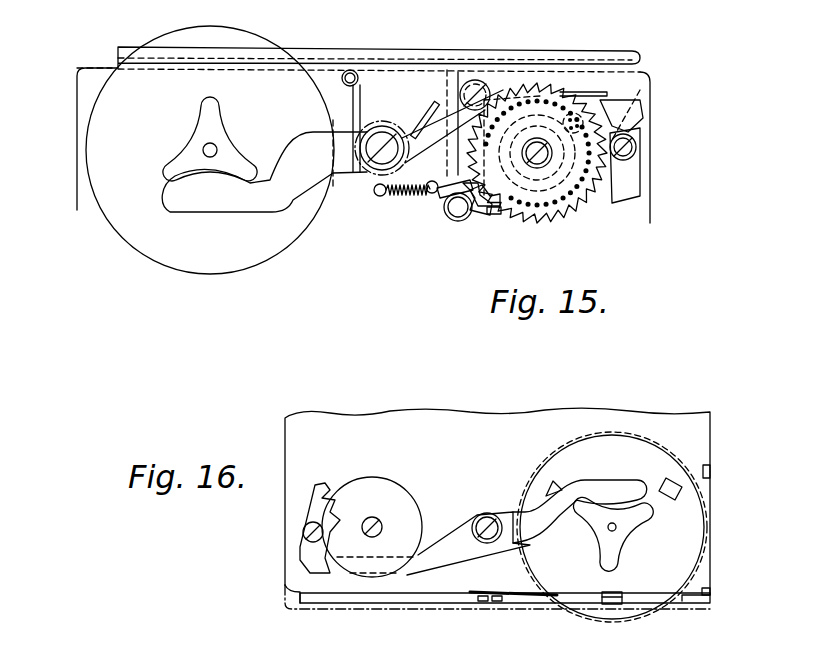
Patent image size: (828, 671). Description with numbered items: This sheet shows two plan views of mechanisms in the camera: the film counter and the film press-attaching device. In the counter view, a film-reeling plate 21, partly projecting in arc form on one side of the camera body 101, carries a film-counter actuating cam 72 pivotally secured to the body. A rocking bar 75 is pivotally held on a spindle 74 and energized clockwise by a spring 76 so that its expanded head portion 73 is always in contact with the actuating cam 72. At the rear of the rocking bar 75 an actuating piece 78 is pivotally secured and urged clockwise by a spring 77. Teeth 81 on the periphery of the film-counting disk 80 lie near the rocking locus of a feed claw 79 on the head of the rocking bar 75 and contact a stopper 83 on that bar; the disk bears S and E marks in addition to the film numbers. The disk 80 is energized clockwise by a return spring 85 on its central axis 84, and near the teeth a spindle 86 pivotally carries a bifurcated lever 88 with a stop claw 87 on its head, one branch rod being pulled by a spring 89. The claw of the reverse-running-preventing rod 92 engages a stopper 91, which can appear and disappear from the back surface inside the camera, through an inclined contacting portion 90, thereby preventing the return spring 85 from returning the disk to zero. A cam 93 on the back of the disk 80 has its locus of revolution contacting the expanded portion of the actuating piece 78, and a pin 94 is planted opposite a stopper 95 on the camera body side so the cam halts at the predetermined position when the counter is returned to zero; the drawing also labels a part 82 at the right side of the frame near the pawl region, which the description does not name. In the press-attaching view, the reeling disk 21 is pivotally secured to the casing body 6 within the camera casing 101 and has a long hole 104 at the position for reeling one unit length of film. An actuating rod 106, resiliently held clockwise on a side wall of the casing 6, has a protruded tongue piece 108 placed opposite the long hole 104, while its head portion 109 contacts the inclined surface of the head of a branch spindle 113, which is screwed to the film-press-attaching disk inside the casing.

In FIG. 15, the film-reeling plate 21 is at (123, 93).
In FIG. 16, the film-reeling plate 21 is at (690, 535).
In FIG. 15, the film-counter actuating cam 72 is at (178, 157).
In FIG. 16, the film-counter actuating cam 72 is at (643, 520).
In FIG. 15, the expanded head portion 73 is at (190, 200).
In FIG. 16, the expanded head portion 73 is at (610, 493).
In FIG. 15, the spindle 74 is at (360, 178).
In FIG. 15, the rocking bar 75 is at (298, 190).
In FIG. 16, the rocking bar 75 is at (543, 510).
In FIG. 15, the spring 76 is at (352, 70).
In FIG. 15, the spring 77 is at (644, 150).
In FIG. 15, the actuating piece 78 is at (636, 150).
In FIG. 15, the feed claw 79 is at (640, 198).
In FIG. 15, the film-counting disk 80 is at (560, 215).
In FIG. 15, the teeth 81 is at (500, 215).
In FIG. 15, the frame side 82 is at (648, 84).
In FIG. 15, the stopper 83 is at (641, 106).
In FIG. 15, the central axis 84 is at (548, 140).
In FIG. 15, the return spring 85 is at (537, 138).
In FIG. 15, the spindle 86 is at (475, 80).
In FIG. 15, the stop claw 87 is at (487, 215).
In FIG. 15, the bifurcated lever 88 is at (462, 221).
In FIG. 15, the spring 89 is at (415, 196).
In FIG. 15, the contacting portion 90 is at (445, 200).
In FIG. 15, the stopper 91 is at (433, 196).
In FIG. 15, the reverse-running-preventing rod 92 is at (443, 100).
In FIG. 15, the cam 93 is at (607, 104).
In FIG. 15, the pin 94 is at (576, 113).
In FIG. 15, the stopper 95 is at (640, 100).
In FIG. 16, the casing body 6 is at (433, 582).
In FIG. 16, the camera body 101 is at (283, 598).
In FIG. 16, the long hole 104 is at (680, 485).
In FIG. 16, the actuating rod 106 is at (533, 598).
In FIG. 16, the protruded tongue piece 108 is at (610, 605).
In FIG. 16, the head portion 109 is at (477, 601).
In FIG. 16, the branch spindle 113 is at (500, 602).